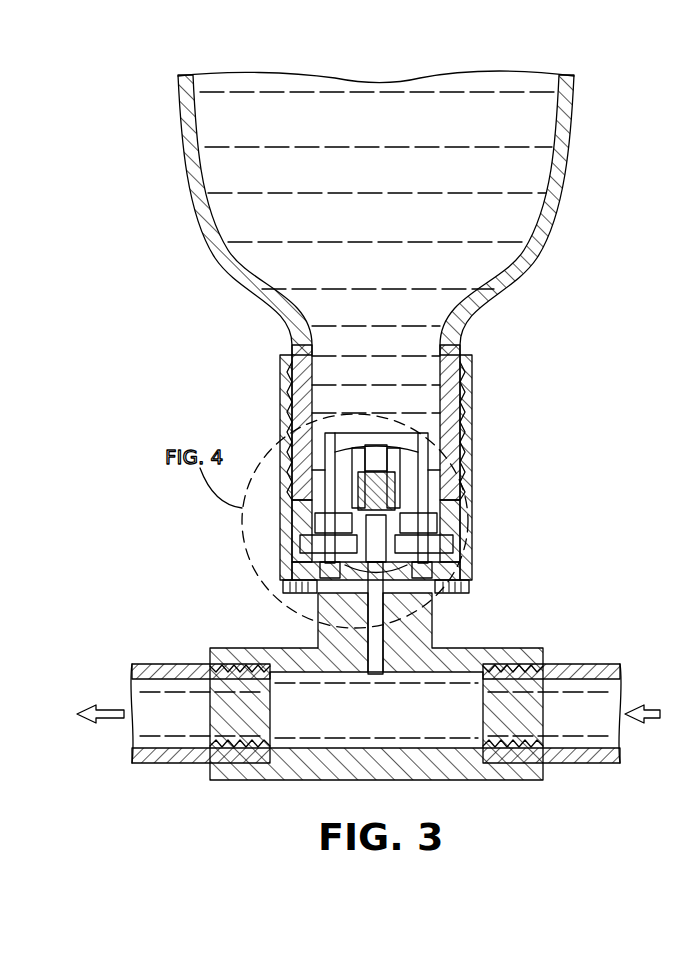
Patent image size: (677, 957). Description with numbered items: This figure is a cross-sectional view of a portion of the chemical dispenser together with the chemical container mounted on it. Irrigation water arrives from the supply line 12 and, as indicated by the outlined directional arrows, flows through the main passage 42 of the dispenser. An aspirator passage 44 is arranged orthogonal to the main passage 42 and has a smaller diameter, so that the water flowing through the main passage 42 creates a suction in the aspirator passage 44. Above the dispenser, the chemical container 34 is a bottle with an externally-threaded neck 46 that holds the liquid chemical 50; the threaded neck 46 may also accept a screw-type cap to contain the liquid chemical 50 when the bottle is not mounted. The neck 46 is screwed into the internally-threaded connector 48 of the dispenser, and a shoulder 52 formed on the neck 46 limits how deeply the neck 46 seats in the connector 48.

The supply line 12 is at (582, 665).
The chemical container 34 is at (570, 188).
The main passage 42 is at (396, 729).
The aspirator passage 44 is at (378, 640).
The externally-threaded neck 46 is at (455, 380).
The internally-threaded connector 48 is at (465, 457).
The liquid chemical 50 is at (396, 131).
The shoulder 52 is at (462, 352).